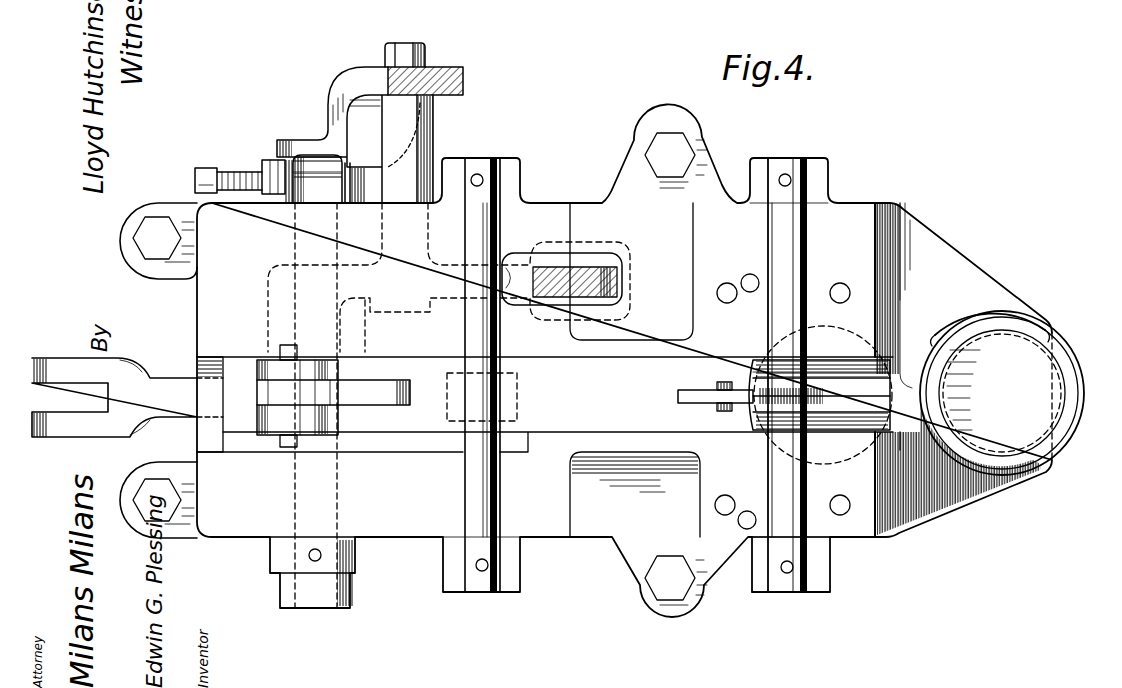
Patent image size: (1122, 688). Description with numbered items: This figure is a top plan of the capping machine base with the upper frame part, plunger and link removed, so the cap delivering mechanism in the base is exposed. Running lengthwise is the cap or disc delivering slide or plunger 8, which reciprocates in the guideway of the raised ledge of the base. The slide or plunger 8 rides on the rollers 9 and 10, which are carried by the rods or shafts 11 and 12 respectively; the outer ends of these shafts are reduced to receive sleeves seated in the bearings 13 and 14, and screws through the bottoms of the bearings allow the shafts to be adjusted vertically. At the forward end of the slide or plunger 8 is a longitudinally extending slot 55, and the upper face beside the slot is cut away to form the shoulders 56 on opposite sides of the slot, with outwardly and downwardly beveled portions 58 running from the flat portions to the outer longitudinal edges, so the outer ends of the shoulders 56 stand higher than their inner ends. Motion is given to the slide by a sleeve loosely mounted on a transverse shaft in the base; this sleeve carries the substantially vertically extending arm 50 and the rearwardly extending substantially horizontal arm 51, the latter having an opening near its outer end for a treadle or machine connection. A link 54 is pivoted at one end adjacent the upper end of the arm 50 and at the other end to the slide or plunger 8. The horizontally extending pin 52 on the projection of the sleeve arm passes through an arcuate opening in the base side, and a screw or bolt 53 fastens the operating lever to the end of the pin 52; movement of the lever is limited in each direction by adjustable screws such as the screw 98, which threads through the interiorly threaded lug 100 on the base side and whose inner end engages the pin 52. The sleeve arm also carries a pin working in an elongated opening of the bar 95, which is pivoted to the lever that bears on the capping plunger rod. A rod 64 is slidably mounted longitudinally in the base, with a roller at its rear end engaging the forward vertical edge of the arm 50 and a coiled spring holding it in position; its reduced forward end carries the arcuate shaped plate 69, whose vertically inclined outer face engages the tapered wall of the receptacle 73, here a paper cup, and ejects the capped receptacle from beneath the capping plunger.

The cap or disc delivering slide or plunger 8 is at (624, 360).
The roller 9 is at (519, 408).
The roller 10 is at (755, 373).
The rod or shaft 11 is at (500, 500).
The rod or shaft 12 is at (805, 223).
The bearing 13 is at (513, 578).
The bearing 14 is at (830, 576).
The vertically extending arm 50 is at (268, 433).
The rearwardly extending horizontal arm 51 is at (165, 387).
The pin 52 is at (420, 148).
The screw or bolt 53 is at (428, 57).
The link 54 is at (385, 398).
The longitudinally extending slot 55 is at (690, 400).
The shoulders 56 is at (755, 378).
The beveled portions 58 is at (843, 372).
The rod 64 is at (957, 370).
The arcuate shaped plate 69 is at (965, 332).
The receptacle 73 is at (1002, 393).
The bar 95 is at (558, 303).
The adjustable screw 98 is at (238, 168).
The interiorly threaded lug 100 is at (329, 195).